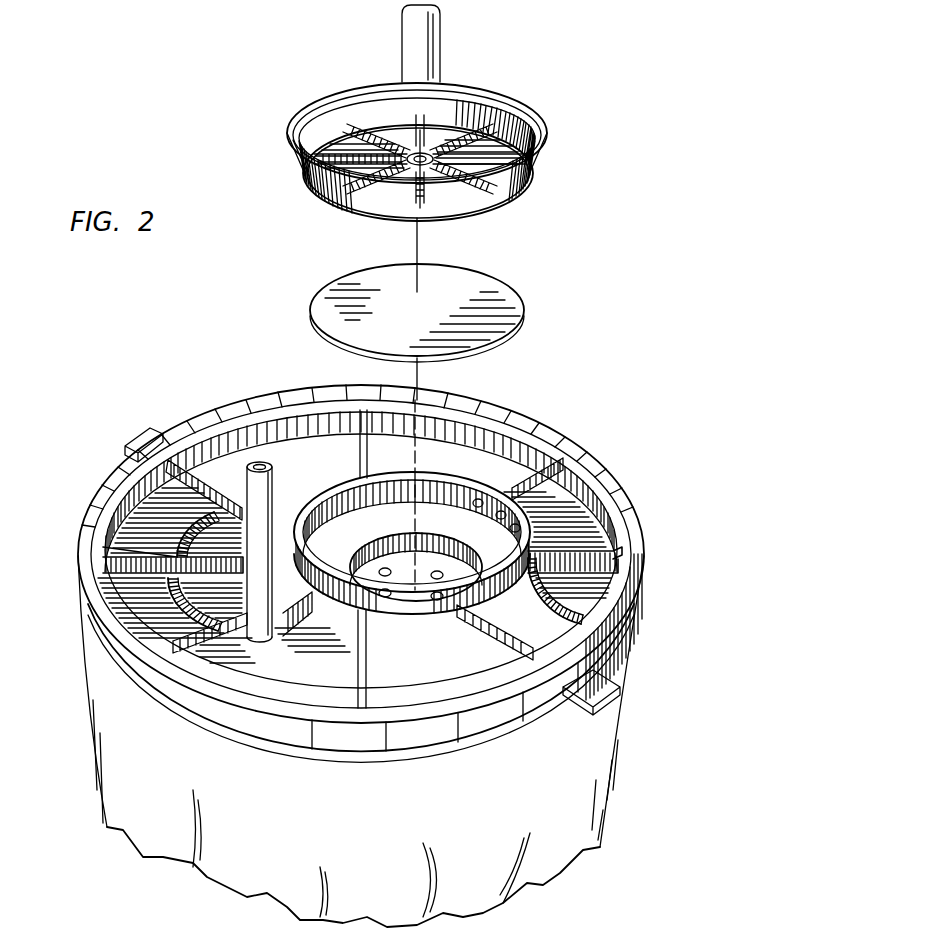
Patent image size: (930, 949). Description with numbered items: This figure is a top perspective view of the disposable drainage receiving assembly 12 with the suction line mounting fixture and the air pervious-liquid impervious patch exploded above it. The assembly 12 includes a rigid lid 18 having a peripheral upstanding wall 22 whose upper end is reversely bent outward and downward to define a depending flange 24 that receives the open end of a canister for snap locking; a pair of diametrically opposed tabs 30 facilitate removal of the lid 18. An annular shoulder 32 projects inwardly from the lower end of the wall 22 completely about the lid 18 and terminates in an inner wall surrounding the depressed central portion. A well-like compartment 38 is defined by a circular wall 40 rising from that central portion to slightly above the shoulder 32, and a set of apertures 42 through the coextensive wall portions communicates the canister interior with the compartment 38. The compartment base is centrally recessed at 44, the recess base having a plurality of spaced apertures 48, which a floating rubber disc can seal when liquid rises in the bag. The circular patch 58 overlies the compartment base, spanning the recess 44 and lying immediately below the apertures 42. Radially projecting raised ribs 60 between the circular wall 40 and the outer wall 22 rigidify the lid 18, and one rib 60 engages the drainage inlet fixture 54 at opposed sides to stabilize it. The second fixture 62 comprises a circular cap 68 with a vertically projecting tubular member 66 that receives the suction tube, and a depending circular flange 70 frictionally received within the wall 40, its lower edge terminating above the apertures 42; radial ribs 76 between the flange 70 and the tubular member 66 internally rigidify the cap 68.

The drainage receiving assembly 12 is at (260, 387).
The rigid lid 18 is at (636, 525).
The peripheral upstanding wall 22 is at (582, 495).
The depending flange 24 is at (623, 630).
The tabs 30 is at (140, 435).
The annular shoulder 32 is at (137, 590).
The well-like compartment 38 is at (441, 524).
The circular wall 40 is at (343, 507).
The apertures 42 is at (520, 520).
The recess 44 is at (420, 560).
The apertures 48 is at (440, 575).
The drainage or inlet fixture 54 is at (247, 513).
The air pervious-liquid impervious patch 58 is at (503, 302).
The raised ribs 60 is at (300, 620).
The second fixture 62 is at (445, 123).
The tubular member 66 is at (432, 43).
The circular cap 68 is at (520, 99).
The depending circular flange 70 is at (507, 190).
The radial ribs 76 is at (345, 196).